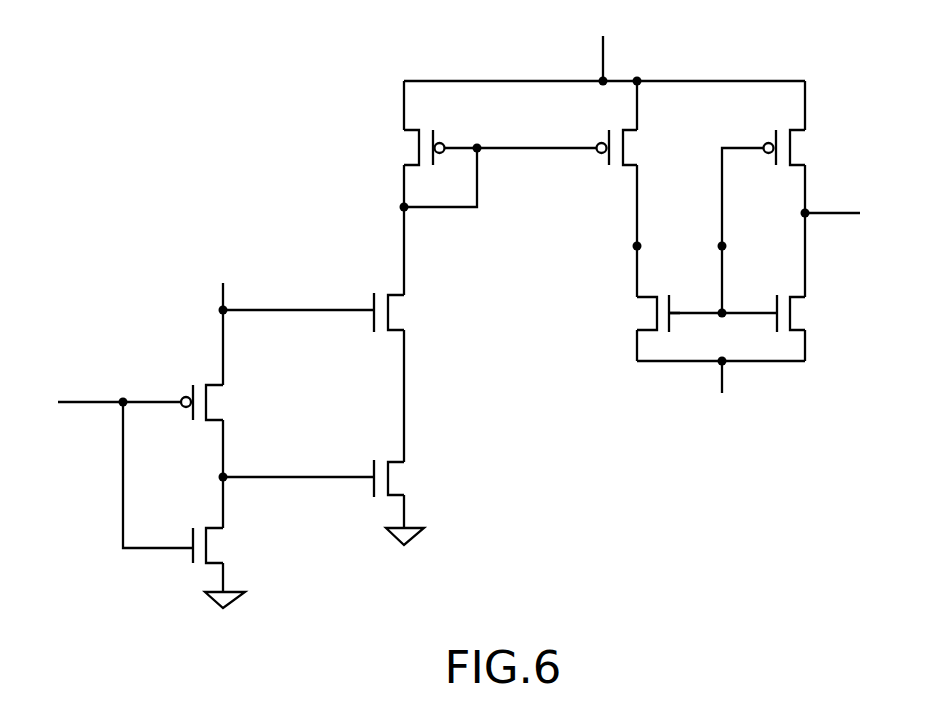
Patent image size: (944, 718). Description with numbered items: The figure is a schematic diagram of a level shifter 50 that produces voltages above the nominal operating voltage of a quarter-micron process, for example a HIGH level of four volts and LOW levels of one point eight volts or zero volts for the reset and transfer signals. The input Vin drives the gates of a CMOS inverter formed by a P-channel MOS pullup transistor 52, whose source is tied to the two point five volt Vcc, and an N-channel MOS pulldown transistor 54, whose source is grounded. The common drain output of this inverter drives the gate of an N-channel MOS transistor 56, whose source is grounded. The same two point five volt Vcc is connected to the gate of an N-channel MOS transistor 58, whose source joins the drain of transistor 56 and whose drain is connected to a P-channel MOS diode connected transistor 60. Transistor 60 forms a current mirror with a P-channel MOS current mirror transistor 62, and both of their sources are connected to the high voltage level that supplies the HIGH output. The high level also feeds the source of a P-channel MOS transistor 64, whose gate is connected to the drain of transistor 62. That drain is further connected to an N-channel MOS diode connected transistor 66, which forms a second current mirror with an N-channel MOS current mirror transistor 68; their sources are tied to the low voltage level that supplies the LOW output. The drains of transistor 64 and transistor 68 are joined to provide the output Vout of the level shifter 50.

The level shifter 50 is at (660, 504).
The P-channel MOS pullup transistor 52 is at (178, 390).
The N-channel MOS pulldown transistor 54 is at (185, 538).
The N-channel MOS transistor 56 is at (367, 488).
The N-channel MOS transistor 58 is at (367, 323).
The P-channel MOS diode connected transistor 60 is at (398, 160).
The P-channel MOS current mirror transistor 62 is at (620, 172).
The P-channel MOS transistor 64 is at (762, 140).
The N-channel MOS diode connected transistor 66 is at (632, 332).
The N-channel MOS current mirror transistor 68 is at (812, 322).